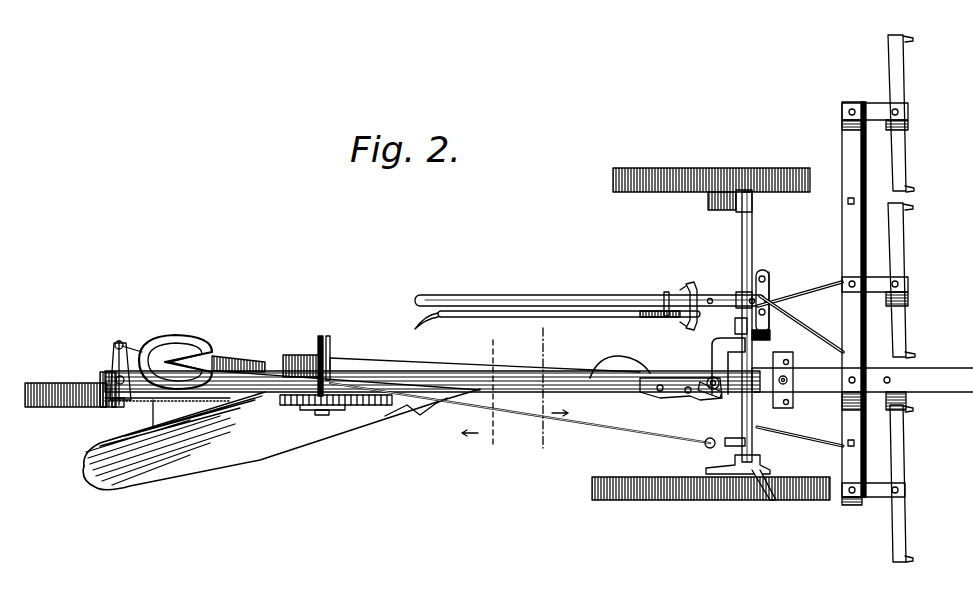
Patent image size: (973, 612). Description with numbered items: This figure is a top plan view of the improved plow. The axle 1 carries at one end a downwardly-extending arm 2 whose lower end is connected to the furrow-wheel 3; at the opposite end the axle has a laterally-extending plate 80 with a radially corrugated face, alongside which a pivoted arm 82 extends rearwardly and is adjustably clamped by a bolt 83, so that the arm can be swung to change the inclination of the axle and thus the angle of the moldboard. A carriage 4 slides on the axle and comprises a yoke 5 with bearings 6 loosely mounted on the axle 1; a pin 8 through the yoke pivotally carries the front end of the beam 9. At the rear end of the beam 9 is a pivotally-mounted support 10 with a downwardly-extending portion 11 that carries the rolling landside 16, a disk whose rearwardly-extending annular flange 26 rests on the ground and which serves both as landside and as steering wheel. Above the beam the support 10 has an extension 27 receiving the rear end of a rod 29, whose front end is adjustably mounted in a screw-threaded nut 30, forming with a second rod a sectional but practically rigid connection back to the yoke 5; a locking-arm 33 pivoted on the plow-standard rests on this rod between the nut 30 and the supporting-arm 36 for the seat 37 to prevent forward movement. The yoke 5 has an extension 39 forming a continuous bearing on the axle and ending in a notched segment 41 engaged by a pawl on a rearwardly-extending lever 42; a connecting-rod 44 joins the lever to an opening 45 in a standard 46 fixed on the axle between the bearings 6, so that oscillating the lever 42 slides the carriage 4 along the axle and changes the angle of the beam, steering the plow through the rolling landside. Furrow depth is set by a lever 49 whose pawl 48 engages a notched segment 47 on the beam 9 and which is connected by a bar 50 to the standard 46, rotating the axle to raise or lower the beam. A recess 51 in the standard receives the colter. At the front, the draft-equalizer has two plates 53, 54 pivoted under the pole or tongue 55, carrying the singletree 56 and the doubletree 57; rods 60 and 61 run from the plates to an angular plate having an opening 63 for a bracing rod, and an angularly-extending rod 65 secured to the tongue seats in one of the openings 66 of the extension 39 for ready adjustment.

The axle 1 is at (742, 240).
The downwardly-extending arm 2 is at (715, 472).
The furrow-wheel 3 is at (704, 496).
The carriage 4 is at (629, 388).
The yoke 5 is at (603, 392).
The bearings 6 is at (736, 326).
The pin 8 is at (662, 392).
The beam 9 is at (432, 387).
The support 10 is at (102, 370).
The downwardly-extending portion 11 is at (113, 406).
The rolling landside 16 is at (136, 404).
The annular flange 26 is at (60, 383).
The extension 27 is at (117, 341).
The rod 29 is at (232, 364).
The screw-threaded nut 30 is at (318, 352).
The locking-arm 33 is at (330, 347).
The supporting-arm 36 is at (290, 360).
The seat 37 is at (184, 336).
The extension 39 is at (786, 297).
The notched segment 41 is at (684, 294).
The lever 42 is at (590, 297).
The connecting-rod 44 is at (776, 333).
The opening 45 is at (742, 296).
The standard 46 is at (708, 390).
The notched segment 47 is at (360, 406).
The pawl 48 is at (310, 412).
The lever 49 is at (224, 400).
The bar or rod 50 is at (596, 370).
The recess 51 is at (522, 416).
The plate 53 is at (874, 313).
The plate 54 is at (882, 335).
The pole or tongue 55 is at (930, 372).
The singletree 56 is at (916, 477).
The doubletree 57 is at (912, 187).
The rod 60 is at (798, 438).
The rod 61 is at (822, 294).
The opening 63 is at (794, 400).
The angularly-extending rod 65 is at (801, 324).
The openings 66 is at (766, 276).
The laterally-extending plate 80 is at (756, 206).
The arm 82 is at (710, 200).
The bolt 83 is at (703, 178).